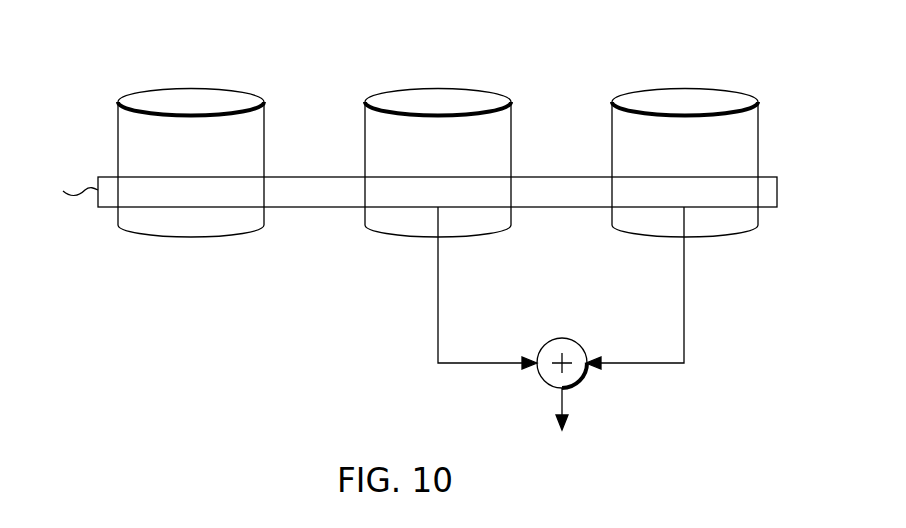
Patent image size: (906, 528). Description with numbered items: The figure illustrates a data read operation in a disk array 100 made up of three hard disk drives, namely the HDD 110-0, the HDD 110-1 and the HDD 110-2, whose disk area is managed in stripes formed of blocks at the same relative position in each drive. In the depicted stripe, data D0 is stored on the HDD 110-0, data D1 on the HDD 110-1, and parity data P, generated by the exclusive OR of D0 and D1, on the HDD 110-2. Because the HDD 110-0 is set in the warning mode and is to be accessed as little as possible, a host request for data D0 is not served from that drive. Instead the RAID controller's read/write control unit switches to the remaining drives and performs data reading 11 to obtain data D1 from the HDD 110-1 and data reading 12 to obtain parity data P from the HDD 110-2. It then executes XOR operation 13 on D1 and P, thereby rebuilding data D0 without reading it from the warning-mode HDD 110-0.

The disk array 100 is at (140, 252).
The HDD 110-0 is at (197, 86).
The HDD 110-1 is at (438, 86).
The HDD 110-2 is at (683, 86).
The data reading 11 is at (438, 314).
The data reading 12 is at (684, 313).
The XOR operation 13 is at (553, 338).